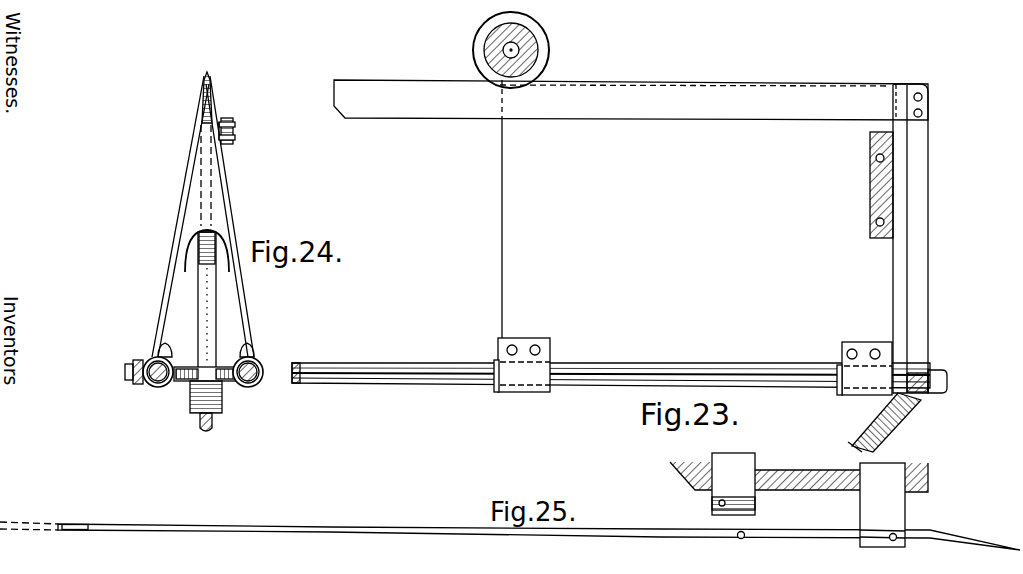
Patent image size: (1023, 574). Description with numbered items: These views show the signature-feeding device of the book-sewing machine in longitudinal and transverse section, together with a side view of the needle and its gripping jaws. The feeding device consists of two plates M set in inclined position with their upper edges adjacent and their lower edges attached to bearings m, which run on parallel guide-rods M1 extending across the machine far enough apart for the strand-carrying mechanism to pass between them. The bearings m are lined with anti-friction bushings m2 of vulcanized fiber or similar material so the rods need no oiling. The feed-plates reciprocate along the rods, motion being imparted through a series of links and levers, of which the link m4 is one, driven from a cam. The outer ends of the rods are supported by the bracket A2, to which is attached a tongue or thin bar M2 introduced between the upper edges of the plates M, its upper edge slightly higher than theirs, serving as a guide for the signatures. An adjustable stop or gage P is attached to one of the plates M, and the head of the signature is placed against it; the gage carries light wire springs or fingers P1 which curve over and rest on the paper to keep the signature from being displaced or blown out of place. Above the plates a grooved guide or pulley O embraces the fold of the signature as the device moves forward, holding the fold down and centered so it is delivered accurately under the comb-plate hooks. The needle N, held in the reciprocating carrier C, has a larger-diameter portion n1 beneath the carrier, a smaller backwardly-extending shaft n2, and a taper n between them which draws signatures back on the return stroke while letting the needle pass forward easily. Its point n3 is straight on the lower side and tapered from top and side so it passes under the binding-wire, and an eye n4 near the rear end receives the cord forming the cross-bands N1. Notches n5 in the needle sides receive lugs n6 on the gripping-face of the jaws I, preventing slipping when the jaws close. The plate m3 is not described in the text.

In FIG. 23, the guide or pulley O is at (519, 49).
In FIG. 23, the tongue or thin bar M2 is at (631, 100).
In FIG. 23, the feed-plates M is at (715, 236).
In FIG. 24, the feed-plates M is at (215, 98).
In FIG. 23, the plate / central bar m3 is at (870, 188).
In FIG. 24, the plate / central bar m3 is at (207, 246).
In FIG. 23, the guide-rods M1 is at (611, 364).
In FIG. 24, the guide-rods M1 is at (163, 386).
In FIG. 23, the bearings m is at (695, 377).
In FIG. 24, the bearings m is at (202, 370).
In FIG. 23, the anti-friction bushings or linings m2 is at (494, 392).
In FIG. 24, the anti-friction bushings or linings m2 is at (168, 364).
In FIG. 24, the link m4 is at (132, 384).
In FIG. 23, the bracket or frame A2 is at (897, 411).
In FIG. 24, the adjustable stop or gage P is at (226, 144).
In FIG. 24, the wire springs or fingers P1 is at (220, 122).
In FIG. 25, the needle N is at (539, 530).
In FIG. 25, the cross-bands N1 is at (29, 537).
In FIG. 25, the taper of needle n is at (638, 519).
In FIG. 25, the forward portion of needle n1 is at (810, 547).
In FIG. 25, the backwardly-extending shaft of needle n2 is at (374, 541).
In FIG. 25, the needle point n3 is at (998, 525).
In FIG. 25, the eye n4 is at (56, 544).
In FIG. 25, the notches or depressions n5 is at (741, 539).
In FIG. 25, the lugs or projections n6 is at (719, 503).
In FIG. 25, the reciprocating carrier or head C is at (799, 471).
In FIG. 25, the jaws I is at (808, 500).